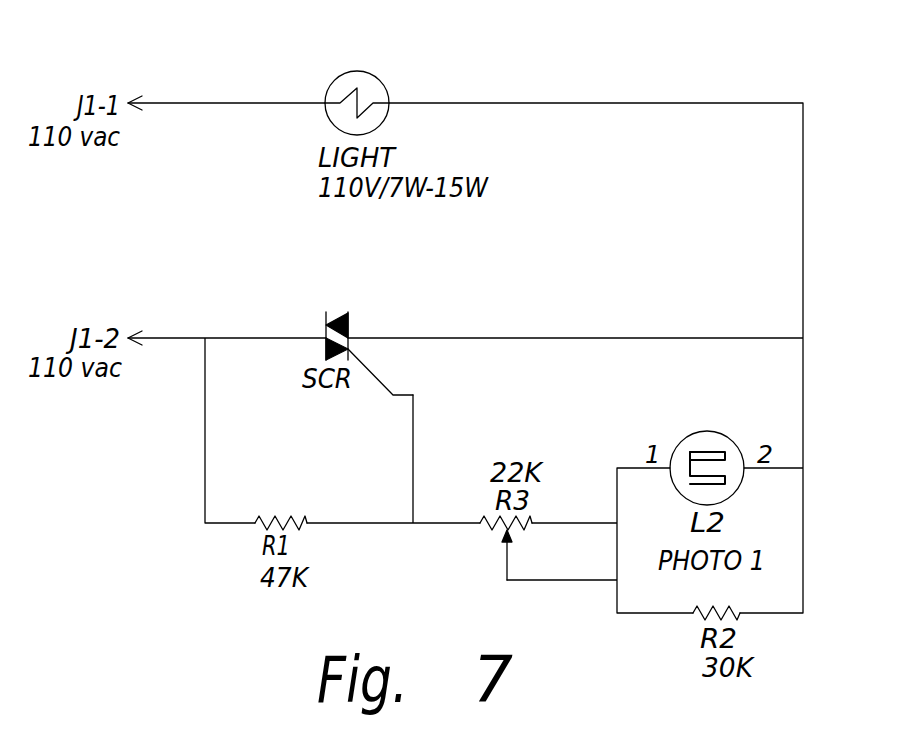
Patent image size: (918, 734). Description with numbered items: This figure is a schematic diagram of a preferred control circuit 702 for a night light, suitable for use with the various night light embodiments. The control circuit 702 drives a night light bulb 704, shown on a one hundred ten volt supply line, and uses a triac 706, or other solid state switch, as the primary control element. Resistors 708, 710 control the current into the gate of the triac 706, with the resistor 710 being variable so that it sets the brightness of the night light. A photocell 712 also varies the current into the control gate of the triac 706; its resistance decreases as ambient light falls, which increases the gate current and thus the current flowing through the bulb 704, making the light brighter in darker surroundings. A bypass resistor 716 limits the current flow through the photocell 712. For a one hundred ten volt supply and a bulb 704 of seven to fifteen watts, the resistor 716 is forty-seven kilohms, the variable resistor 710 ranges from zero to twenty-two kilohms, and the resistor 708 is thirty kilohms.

The control circuit 702 is at (344, 36).
The night light bulb 704 is at (386, 82).
The triac 706 is at (355, 311).
The resistor 708 is at (690, 626).
The variable resistor 710 is at (497, 536).
The photocell 712 is at (716, 431).
The bypass resistor 716 is at (252, 531).